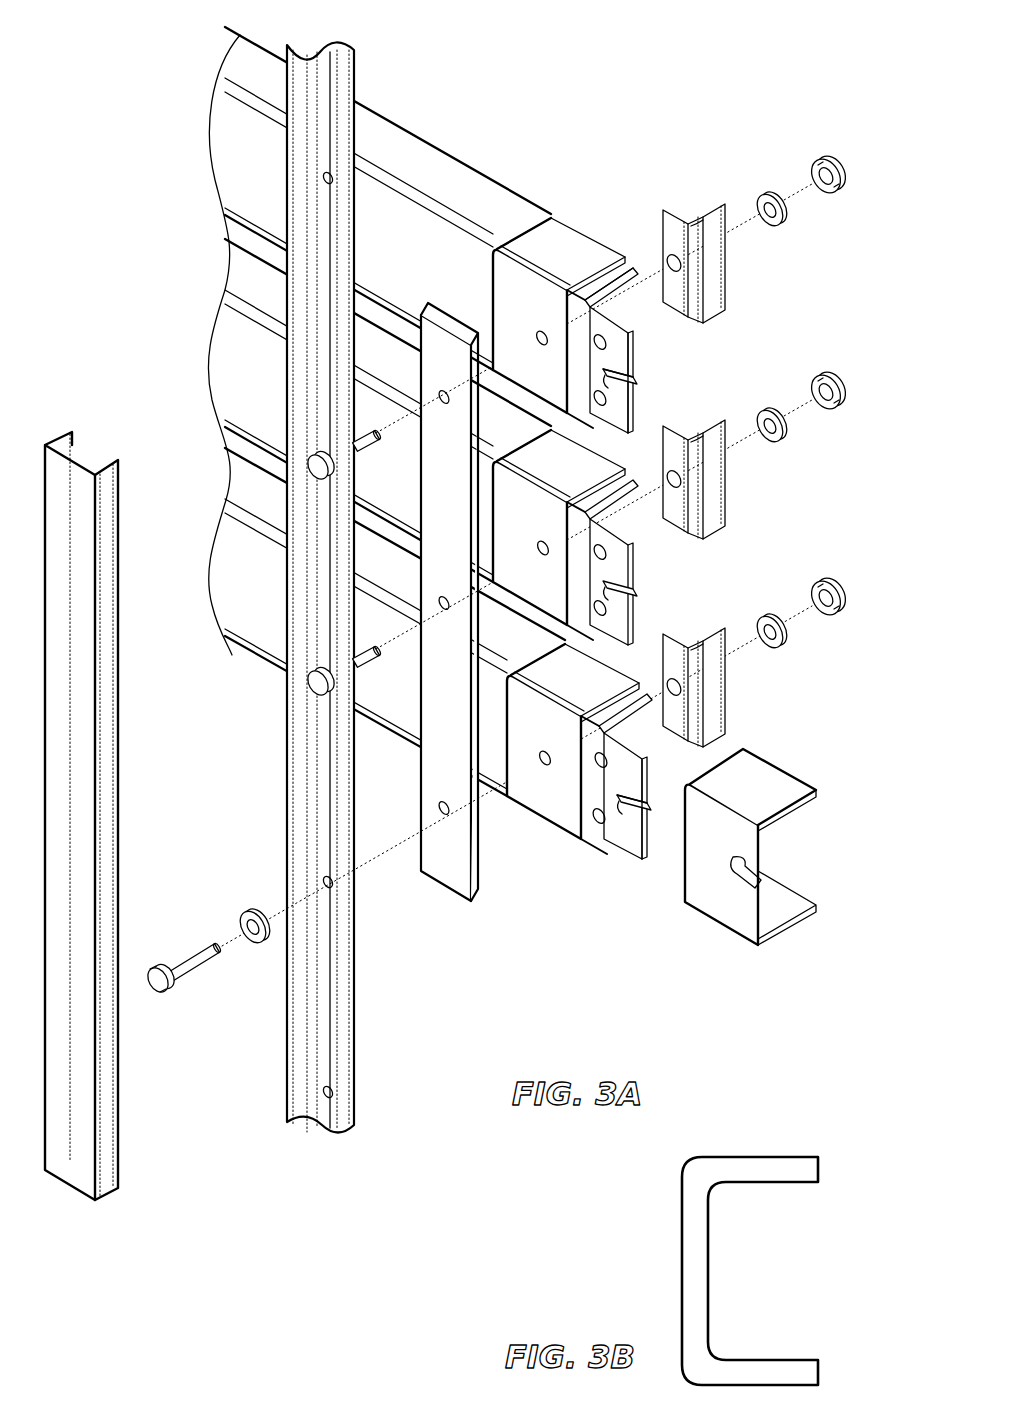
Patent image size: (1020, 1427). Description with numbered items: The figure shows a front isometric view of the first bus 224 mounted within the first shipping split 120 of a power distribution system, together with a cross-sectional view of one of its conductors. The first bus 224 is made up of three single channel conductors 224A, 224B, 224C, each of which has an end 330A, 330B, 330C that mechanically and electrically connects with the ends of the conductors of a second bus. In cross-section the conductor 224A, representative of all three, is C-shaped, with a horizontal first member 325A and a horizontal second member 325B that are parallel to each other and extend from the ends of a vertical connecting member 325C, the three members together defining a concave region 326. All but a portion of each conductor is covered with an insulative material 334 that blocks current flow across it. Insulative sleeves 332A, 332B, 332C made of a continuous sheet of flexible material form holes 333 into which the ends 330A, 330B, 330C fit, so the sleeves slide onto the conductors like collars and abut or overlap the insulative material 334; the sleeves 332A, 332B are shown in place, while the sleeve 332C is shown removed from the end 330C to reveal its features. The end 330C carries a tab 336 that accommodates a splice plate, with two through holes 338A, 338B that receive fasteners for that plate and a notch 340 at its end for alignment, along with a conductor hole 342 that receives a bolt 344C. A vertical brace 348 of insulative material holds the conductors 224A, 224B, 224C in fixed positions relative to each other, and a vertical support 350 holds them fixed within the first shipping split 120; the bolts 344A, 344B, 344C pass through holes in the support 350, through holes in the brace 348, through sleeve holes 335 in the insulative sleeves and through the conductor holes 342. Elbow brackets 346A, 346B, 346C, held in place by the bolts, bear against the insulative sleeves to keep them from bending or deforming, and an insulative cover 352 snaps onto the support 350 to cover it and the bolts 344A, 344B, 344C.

In FIG. 3A, the first shipping split 120 is at (438, 98).
In FIG. 3A, the first bus 224 is at (482, 136).
In FIG. 3A, the conductor 224A is at (675, 290).
In FIG. 3B, the conductor 224A is at (731, 1244).
In FIG. 3A, the conductor 224B is at (676, 562).
In FIG. 3A, the conductor 224C is at (592, 817).
In FIG. 3A, the first member 325A is at (627, 268).
In FIG. 3B, the first member 325A is at (780, 1184).
In FIG. 3A, the second member 325B is at (640, 386).
In FIG. 3B, the second member 325B is at (778, 1358).
In FIG. 3A, the connecting member 325C is at (634, 358).
In FIG. 3B, the connecting member 325C is at (682, 1240).
In FIG. 3B, the concave region 326 is at (795, 1280).
In FIG. 3A, the end 330A is at (634, 332).
In FIG. 3A, the end 330B is at (636, 565).
In FIG. 3A, the end 330C is at (645, 836).
In FIG. 3A, the insulative sleeve 332A is at (575, 243).
In FIG. 3A, the insulative sleeve 332B is at (555, 598).
In FIG. 3A, the insulative sleeve 332C is at (735, 930).
In FIG. 3A, the hole 333 is at (757, 875).
In FIG. 3A, the insulative material 334 is at (255, 630).
In FIG. 3A, the sleeve hole 335 is at (739, 862).
In FIG. 3A, the tab 336 is at (644, 777).
In FIG. 3A, the through hole 338A is at (597, 822).
In FIG. 3A, the through hole 338B is at (604, 757).
In FIG. 3A, the notch 340 is at (618, 838).
In FIG. 3A, the conductor hole 342 is at (544, 755).
In FIG. 3A, the bolt 344A is at (314, 458).
In FIG. 3A, the bolt 344B is at (312, 681).
In FIG. 3A, the bolt 344C is at (215, 956).
In FIG. 3A, the elbow bracket 346A is at (727, 268).
In FIG. 3A, the elbow bracket 346B is at (727, 484).
In FIG. 3A, the elbow bracket 346C is at (727, 696).
In FIG. 3A, the brace 348 is at (445, 900).
In FIG. 3A, the support 350 is at (357, 1085).
In FIG. 3A, the insulative cover 352 is at (118, 1140).